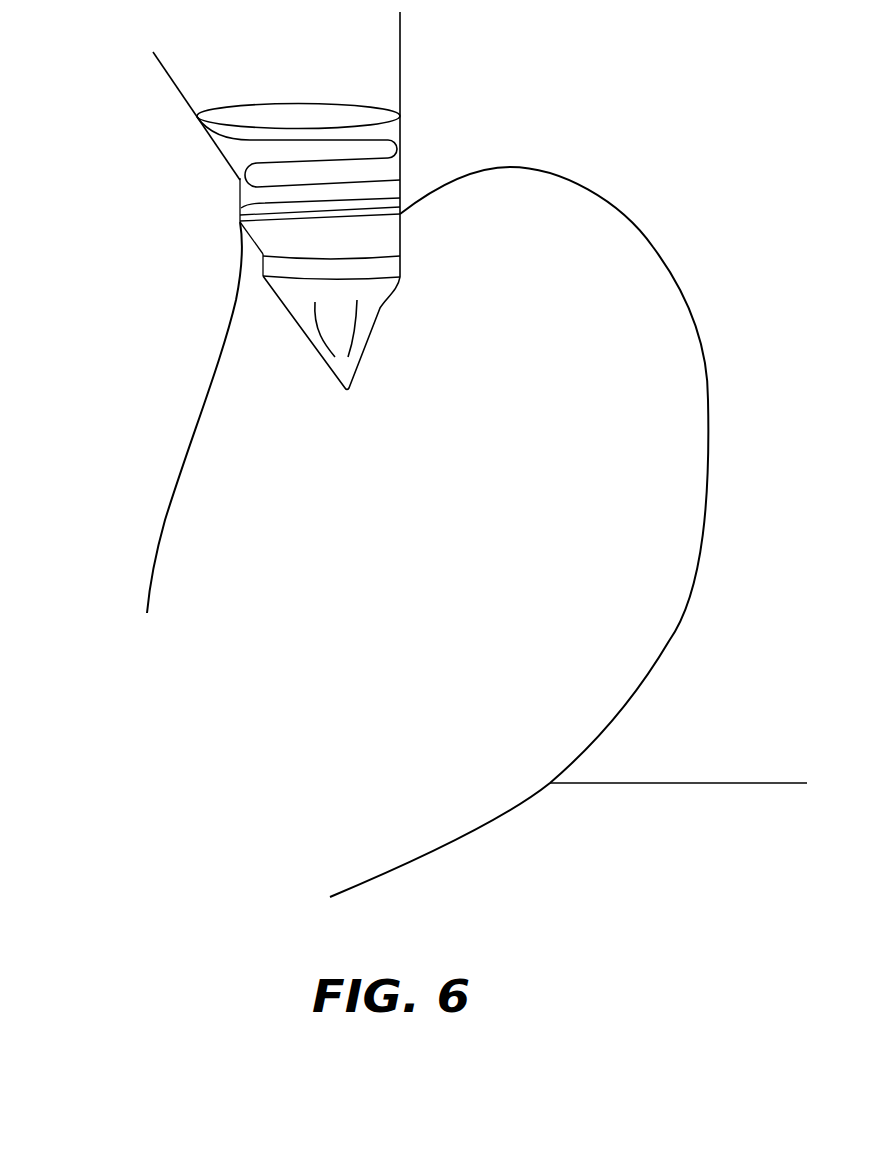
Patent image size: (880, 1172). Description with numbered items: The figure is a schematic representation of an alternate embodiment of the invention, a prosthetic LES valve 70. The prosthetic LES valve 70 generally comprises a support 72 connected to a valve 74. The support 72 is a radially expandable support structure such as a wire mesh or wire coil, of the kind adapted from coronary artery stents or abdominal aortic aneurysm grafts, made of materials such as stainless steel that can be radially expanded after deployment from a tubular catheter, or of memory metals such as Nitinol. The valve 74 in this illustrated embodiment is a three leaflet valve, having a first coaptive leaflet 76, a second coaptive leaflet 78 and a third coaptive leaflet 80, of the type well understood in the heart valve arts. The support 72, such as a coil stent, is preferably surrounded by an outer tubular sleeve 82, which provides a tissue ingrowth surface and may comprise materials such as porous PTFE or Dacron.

The prosthetic LES valve 70 is at (200, 263).
The support 72 is at (400, 122).
The valve 74 is at (497, 257).
The first coaptive leaflet 76 is at (315, 338).
The second coaptive leaflet 78 is at (345, 343).
The third coaptive leaflet 80 is at (372, 307).
The outer tubular sleeve 82 is at (400, 167).